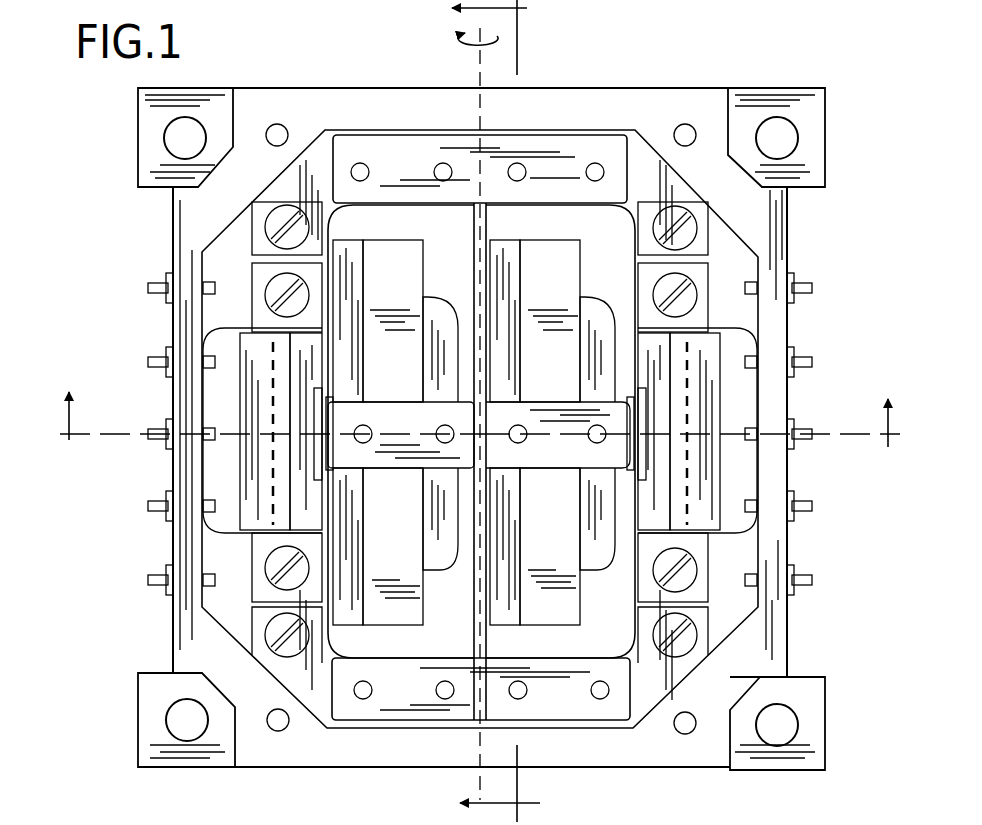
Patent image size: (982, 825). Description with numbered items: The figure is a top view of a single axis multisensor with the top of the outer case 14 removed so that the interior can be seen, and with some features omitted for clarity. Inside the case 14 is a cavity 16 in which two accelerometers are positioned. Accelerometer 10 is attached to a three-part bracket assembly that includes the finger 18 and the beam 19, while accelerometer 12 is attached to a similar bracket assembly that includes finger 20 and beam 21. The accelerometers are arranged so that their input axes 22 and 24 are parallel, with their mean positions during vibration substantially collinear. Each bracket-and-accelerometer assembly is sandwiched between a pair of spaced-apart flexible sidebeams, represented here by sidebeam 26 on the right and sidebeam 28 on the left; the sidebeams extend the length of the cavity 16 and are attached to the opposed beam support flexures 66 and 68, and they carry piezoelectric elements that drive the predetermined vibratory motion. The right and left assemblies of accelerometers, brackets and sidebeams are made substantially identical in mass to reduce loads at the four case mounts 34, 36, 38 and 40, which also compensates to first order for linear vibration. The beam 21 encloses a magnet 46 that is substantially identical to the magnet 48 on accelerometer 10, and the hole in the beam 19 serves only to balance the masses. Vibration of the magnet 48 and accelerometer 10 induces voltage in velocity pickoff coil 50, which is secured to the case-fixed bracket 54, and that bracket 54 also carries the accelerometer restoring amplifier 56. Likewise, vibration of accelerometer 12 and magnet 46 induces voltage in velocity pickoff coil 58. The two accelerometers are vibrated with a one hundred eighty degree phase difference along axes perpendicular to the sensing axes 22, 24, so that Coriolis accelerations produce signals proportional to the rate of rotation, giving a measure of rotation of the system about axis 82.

The accelerometer 10 is at (590, 290).
The accelerometer 12 is at (432, 290).
The outer case 14 is at (773, 227).
The cavity 16 is at (460, 236).
The finger 18 is at (547, 462).
The beam 19 is at (512, 353).
The finger 20 is at (395, 462).
The beam 21 is at (350, 353).
The input axis 22 is at (862, 440).
The input axis 24 is at (100, 434).
The sidebeam 26 is at (568, 645).
The sidebeam 28 is at (438, 638).
The case mount 34 is at (817, 122).
The case mount 36 is at (817, 718).
The case mount 38 is at (147, 732).
The case mount 40 is at (146, 155).
The magnet 46 is at (332, 450).
The magnet 48 is at (620, 392).
The velocity pickoff coil 50 is at (645, 462).
The case-fixed bracket 54 is at (638, 550).
The accelerometer restoring amplifier 56 is at (707, 362).
The velocity pickoff coil 58 is at (317, 460).
The beam support flexure 66 is at (588, 147).
The beam support flexure 68 is at (577, 710).
The axis 82 is at (478, 60).